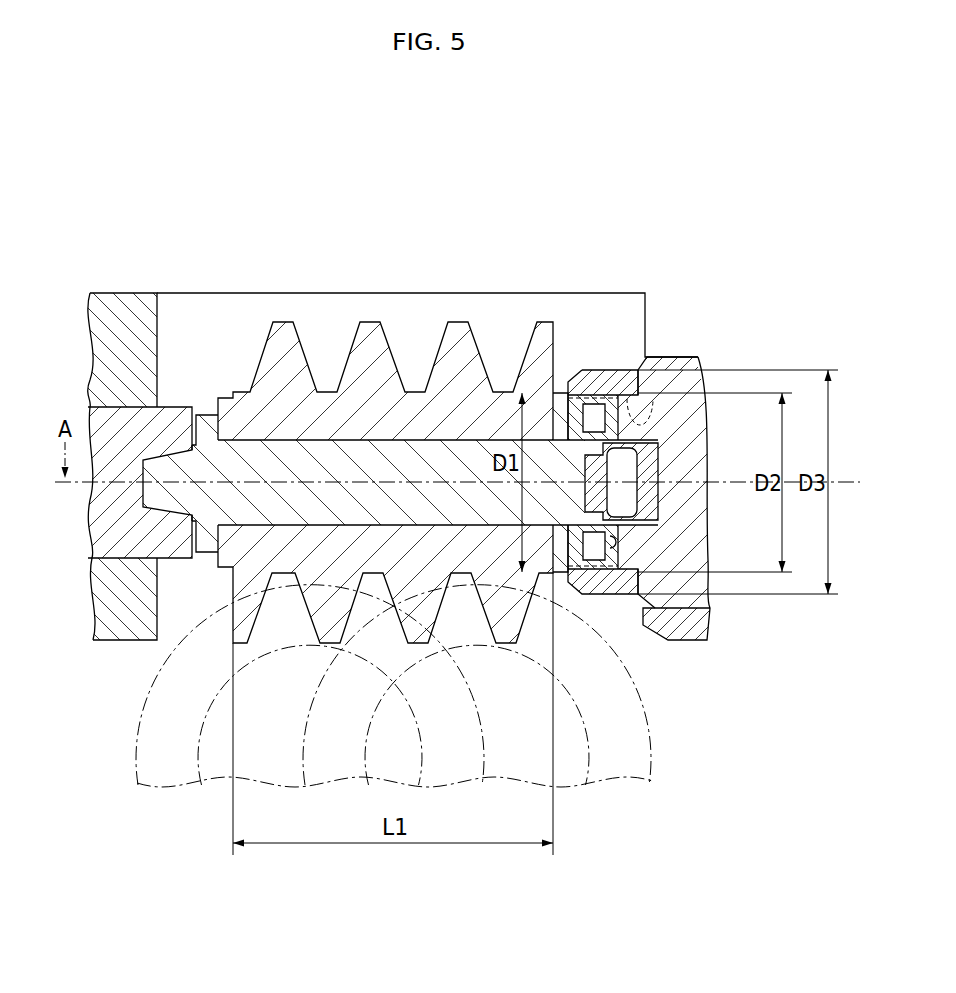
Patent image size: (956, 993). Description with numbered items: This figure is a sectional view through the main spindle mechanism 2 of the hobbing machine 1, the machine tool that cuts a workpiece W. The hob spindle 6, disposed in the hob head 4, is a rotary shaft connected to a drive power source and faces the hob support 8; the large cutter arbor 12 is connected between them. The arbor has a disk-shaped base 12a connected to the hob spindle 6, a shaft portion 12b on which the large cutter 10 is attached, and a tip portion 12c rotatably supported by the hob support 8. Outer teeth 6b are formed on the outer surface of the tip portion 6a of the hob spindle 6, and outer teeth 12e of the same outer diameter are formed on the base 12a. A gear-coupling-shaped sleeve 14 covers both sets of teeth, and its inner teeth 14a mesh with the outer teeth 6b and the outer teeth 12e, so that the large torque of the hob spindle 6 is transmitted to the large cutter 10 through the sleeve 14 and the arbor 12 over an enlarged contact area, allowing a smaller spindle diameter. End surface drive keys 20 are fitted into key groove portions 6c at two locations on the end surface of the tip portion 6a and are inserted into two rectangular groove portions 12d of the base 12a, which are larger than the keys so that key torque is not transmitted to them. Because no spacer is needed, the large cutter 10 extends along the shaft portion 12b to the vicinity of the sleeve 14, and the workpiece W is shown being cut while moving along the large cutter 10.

The hobbing machine 1 is at (290, 266).
The main spindle mechanism 2 is at (604, 362).
The hob head 4 is at (674, 369).
The hob spindle 6 is at (690, 370).
The tip portion 6a is at (632, 418).
The outer teeth 6b is at (632, 376).
The key groove portions 6c is at (618, 542).
The hob support 8 is at (172, 548).
The large cutter 10 is at (370, 336).
The large cutter arbor 12 is at (456, 440).
The base 12a is at (566, 423).
The shaft portion 12b is at (411, 432).
The tip portion 12c is at (170, 470).
The groove portions 12d is at (556, 580).
The outer teeth 12e is at (578, 370).
The gear-coupling-shaped sleeve 14 is at (590, 370).
The inner teeth 14a is at (647, 394).
The end surface drive keys 20 is at (594, 552).
The workpiece W is at (164, 715).